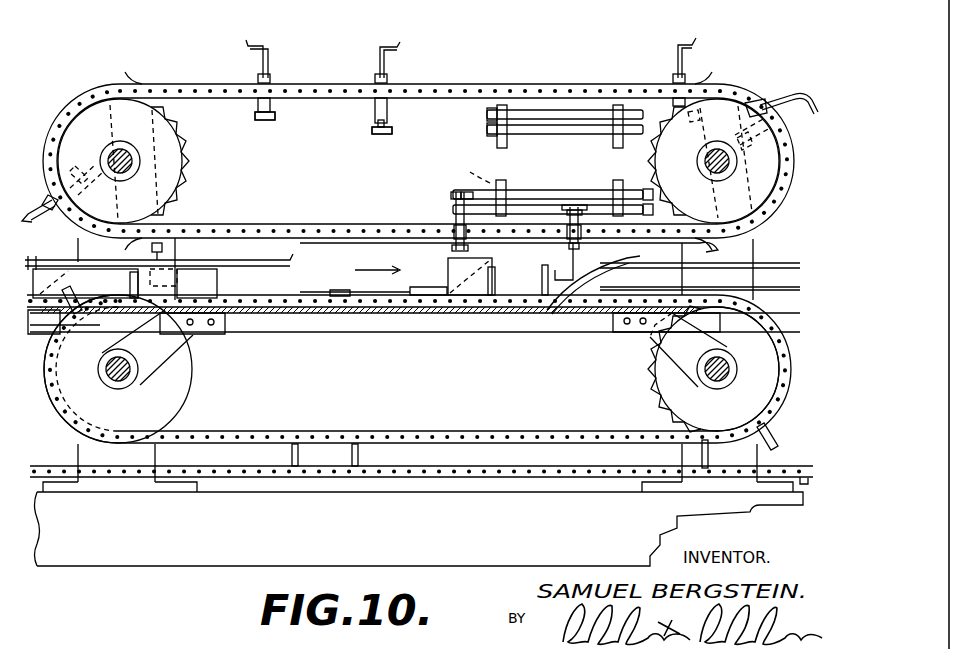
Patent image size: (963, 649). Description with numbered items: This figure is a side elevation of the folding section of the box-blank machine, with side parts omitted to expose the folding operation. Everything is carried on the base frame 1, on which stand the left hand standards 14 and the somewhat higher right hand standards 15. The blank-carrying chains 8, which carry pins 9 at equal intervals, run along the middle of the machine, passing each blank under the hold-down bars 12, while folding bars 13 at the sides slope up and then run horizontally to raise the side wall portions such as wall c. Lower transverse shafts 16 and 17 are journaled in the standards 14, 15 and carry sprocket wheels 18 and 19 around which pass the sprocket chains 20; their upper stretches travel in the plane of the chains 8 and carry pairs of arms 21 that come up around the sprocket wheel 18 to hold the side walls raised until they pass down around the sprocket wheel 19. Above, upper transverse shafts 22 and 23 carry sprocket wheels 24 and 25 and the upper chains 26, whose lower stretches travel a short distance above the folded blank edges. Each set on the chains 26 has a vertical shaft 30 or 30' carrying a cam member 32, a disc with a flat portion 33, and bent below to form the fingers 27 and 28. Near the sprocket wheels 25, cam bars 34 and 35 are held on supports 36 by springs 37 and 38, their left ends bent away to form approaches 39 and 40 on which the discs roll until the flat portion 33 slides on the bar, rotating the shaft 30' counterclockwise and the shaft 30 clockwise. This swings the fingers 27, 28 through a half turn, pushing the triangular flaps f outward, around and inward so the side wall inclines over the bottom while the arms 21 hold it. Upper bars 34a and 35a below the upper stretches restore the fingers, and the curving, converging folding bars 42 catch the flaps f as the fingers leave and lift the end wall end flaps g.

The base frame 1 is at (222, 552).
The chains 8 is at (598, 260).
The pins 9 is at (400, 308).
The hold-down bars 12 is at (310, 290).
The folding bars 13 is at (290, 262).
The left hand standards 14 is at (74, 452).
The right hand standards 15 is at (758, 250).
The lower transverse shaft 16 is at (100, 366).
The lower transverse shaft 17 is at (717, 382).
The sprocket wheels 18 is at (190, 390).
The sprocket wheels 19 is at (652, 394).
The sprocket chains 20 is at (360, 312).
The arms 21 is at (78, 312).
The upper transverse shaft 22 is at (108, 152).
The upper transverse shaft 23 is at (729, 164).
The sprocket wheels 24 is at (178, 154).
The sprocket wheels 25 is at (733, 88).
The upper chains 26 is at (432, 86).
The finger 27 is at (36, 200).
The finger 28 is at (255, 44).
The shaft 30 is at (588, 233).
The shaft 30' is at (428, 242).
The cam member 32 is at (265, 122).
The flat portion 33 is at (388, 128).
The cam bar 34 is at (545, 192).
The upper bar 34a is at (530, 134).
The cam bar 35 is at (612, 180).
The upper bar 35a is at (550, 110).
The supports 36 is at (490, 140).
The spring 37 is at (505, 146).
The spring 38 is at (508, 190).
The approach 39 is at (476, 176).
The approach 40 is at (456, 212).
The folding bars 42 is at (700, 262).
The side wall portion C is at (512, 258).
The triangular flap portions f is at (40, 258).
The rectangular flaps g is at (430, 312).